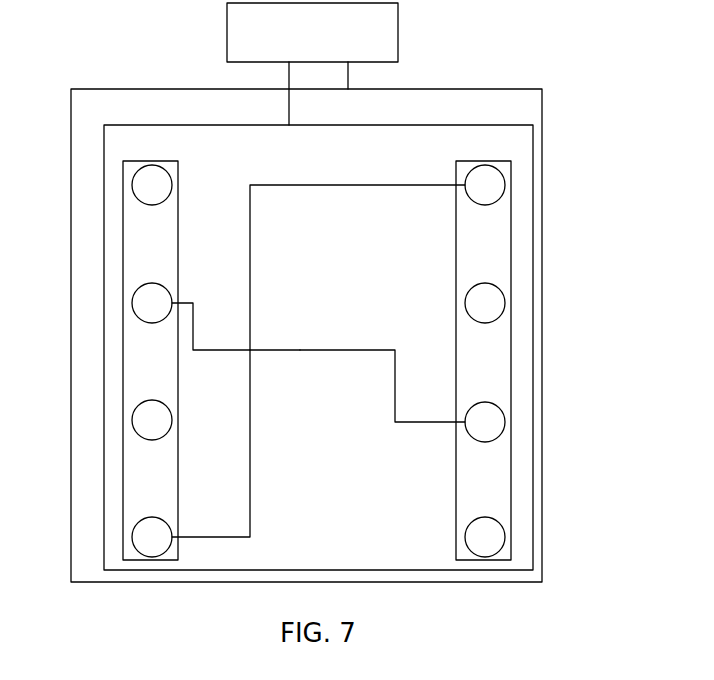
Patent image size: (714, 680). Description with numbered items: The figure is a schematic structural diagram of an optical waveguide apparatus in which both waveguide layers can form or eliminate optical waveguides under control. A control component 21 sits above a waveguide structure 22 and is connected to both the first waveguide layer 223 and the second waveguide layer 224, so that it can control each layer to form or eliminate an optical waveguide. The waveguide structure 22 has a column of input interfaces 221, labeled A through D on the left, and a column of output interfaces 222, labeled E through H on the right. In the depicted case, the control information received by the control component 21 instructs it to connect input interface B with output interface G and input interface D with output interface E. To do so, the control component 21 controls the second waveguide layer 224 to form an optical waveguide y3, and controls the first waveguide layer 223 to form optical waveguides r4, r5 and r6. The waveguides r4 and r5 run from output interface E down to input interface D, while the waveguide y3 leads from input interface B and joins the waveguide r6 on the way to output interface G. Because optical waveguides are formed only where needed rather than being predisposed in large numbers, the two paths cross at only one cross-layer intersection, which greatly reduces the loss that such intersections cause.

The control component 21 is at (312, 64).
The waveguide structure 22 is at (143, 70).
The input interfaces 221 is at (123, 171).
The output interfaces 222 is at (511, 175).
The first waveguide layer 223 is at (318, 347).
The second waveguide layer 224 is at (306, 335).
The optical waveguide r4 is at (252, 258).
The optical waveguide r5 is at (252, 423).
The optical waveguide r6 is at (370, 348).
The optical waveguide y3 is at (252, 342).